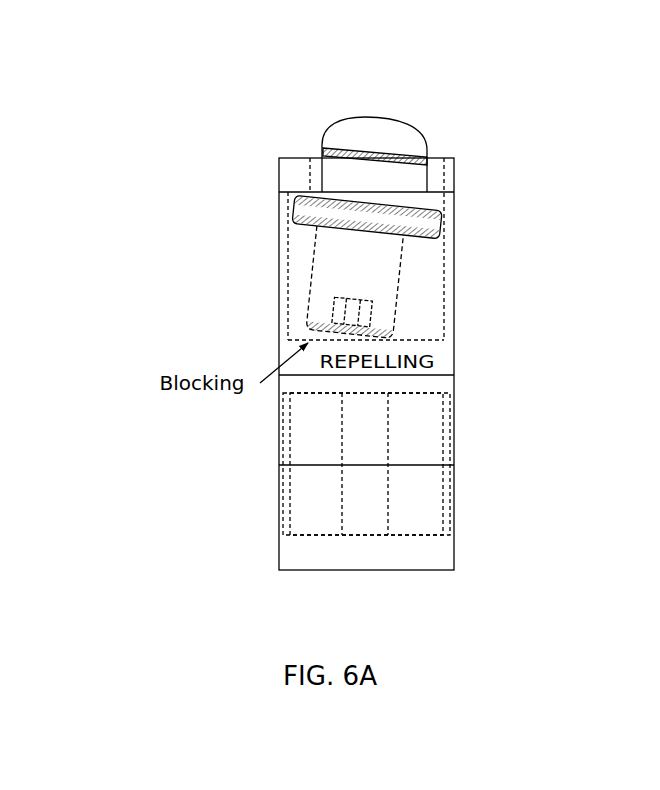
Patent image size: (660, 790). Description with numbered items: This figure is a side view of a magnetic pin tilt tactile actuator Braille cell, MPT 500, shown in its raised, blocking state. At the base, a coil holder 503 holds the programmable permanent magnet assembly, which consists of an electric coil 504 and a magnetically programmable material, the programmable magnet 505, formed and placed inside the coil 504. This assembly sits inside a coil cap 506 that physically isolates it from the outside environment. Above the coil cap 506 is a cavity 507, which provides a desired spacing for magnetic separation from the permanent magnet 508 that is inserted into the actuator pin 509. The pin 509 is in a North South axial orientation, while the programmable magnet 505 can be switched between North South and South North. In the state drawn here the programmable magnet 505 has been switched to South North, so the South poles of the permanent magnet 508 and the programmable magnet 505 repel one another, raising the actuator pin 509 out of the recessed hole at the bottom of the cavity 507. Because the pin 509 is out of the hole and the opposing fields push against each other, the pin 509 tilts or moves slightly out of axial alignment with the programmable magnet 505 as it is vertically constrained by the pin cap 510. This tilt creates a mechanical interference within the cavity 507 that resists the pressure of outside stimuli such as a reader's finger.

The magnetic pin tilt tactile actuator 500 is at (370, 601).
The coil holder 503 is at (448, 547).
The electric coil 504 is at (318, 451).
The programmable magnet 505 is at (345, 502).
The coil cap 506 is at (453, 388).
The cavity 507 is at (444, 290).
The permanent magnet 508 is at (323, 310).
The actuator pin 509 is at (352, 133).
The pin cap 510 is at (298, 177).